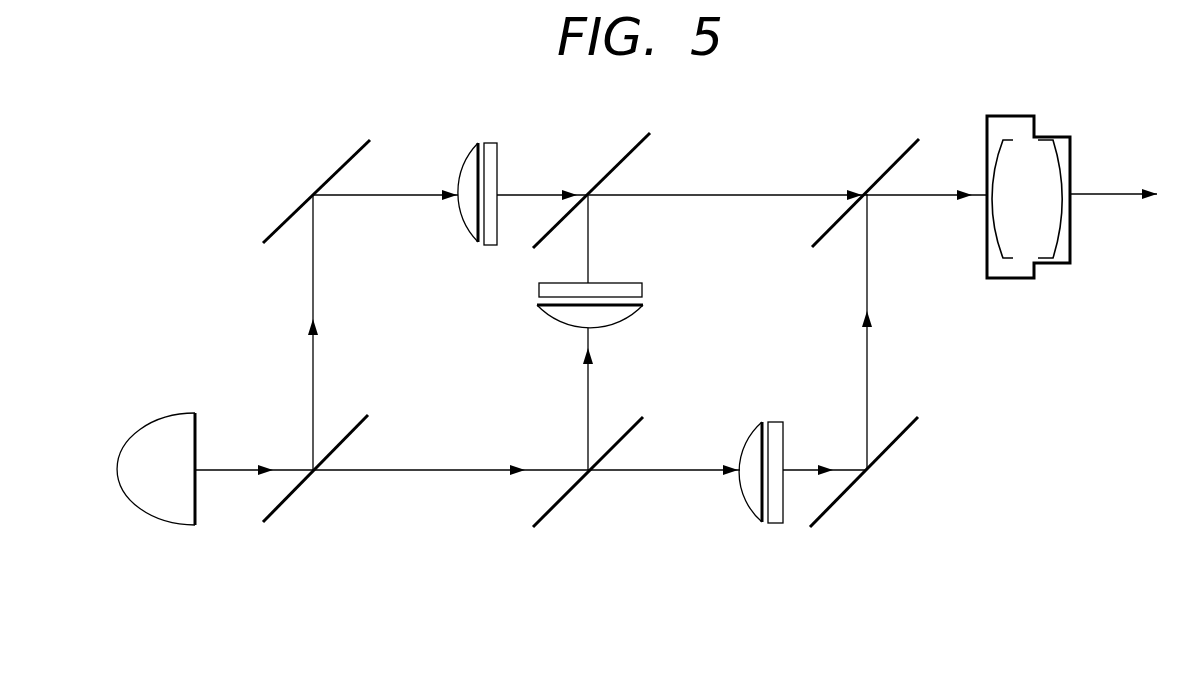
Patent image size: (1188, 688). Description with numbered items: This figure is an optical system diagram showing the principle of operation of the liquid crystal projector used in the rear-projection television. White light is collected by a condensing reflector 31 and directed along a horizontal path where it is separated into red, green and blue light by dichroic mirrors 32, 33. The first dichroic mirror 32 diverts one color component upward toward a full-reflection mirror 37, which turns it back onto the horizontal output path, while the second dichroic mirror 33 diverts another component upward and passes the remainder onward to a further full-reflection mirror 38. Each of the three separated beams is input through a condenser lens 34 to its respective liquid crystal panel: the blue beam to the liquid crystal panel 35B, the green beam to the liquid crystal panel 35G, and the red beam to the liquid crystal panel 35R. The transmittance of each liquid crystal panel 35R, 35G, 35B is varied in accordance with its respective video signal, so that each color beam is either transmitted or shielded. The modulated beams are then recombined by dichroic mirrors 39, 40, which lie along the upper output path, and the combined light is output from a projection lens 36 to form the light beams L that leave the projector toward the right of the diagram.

The condensing reflector 31 is at (152, 512).
The dichroic mirror 32 is at (268, 513).
The dichroic mirror 33 is at (547, 513).
The condenser lens 34 is at (462, 170).
The liquid crystal panel 35B is at (490, 142).
The liquid crystal panel 35G is at (643, 289).
The liquid crystal panel 35R is at (773, 525).
The projection lens 36 is at (1007, 280).
The full-reflection mirror 37 is at (343, 165).
The full-reflection mirror 38 is at (825, 513).
The dichroic mirror 39 is at (617, 164).
The dichroic mirror 40 is at (900, 158).
The light beams L is at (1100, 192).